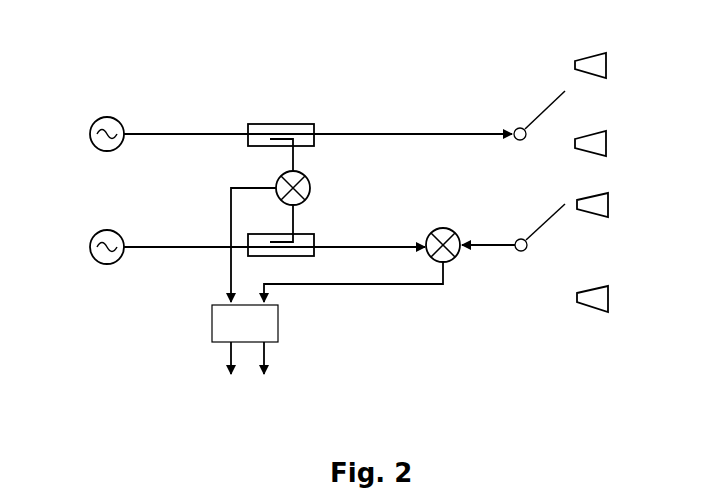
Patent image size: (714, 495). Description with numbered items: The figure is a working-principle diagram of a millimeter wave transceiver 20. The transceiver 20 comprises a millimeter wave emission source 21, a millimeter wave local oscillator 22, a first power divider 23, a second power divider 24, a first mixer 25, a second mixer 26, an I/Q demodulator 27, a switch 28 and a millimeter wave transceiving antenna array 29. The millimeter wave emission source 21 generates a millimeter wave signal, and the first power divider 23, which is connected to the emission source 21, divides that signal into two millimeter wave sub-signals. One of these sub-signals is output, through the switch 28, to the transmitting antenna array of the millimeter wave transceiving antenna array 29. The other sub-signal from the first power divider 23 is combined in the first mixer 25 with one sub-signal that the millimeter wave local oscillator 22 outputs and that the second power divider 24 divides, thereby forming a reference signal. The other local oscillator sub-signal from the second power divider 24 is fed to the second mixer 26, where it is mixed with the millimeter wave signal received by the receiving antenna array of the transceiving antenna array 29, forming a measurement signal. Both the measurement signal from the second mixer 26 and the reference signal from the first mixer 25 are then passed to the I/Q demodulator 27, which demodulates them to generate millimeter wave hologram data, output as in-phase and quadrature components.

The millimeter wave transceiver 20 is at (417, 79).
The millimeter wave emission source 21 is at (90, 134).
The millimeter wave local oscillator 22 is at (90, 246).
The first power divider 23 is at (276, 133).
The second power divider 24 is at (282, 258).
The first mixer 25 is at (310, 188).
The second mixer 26 is at (452, 257).
The I/Q demodulator 27 is at (278, 325).
The switch 28 is at (520, 140).
The millimeter wave transceiving antenna array 29 is at (600, 304).